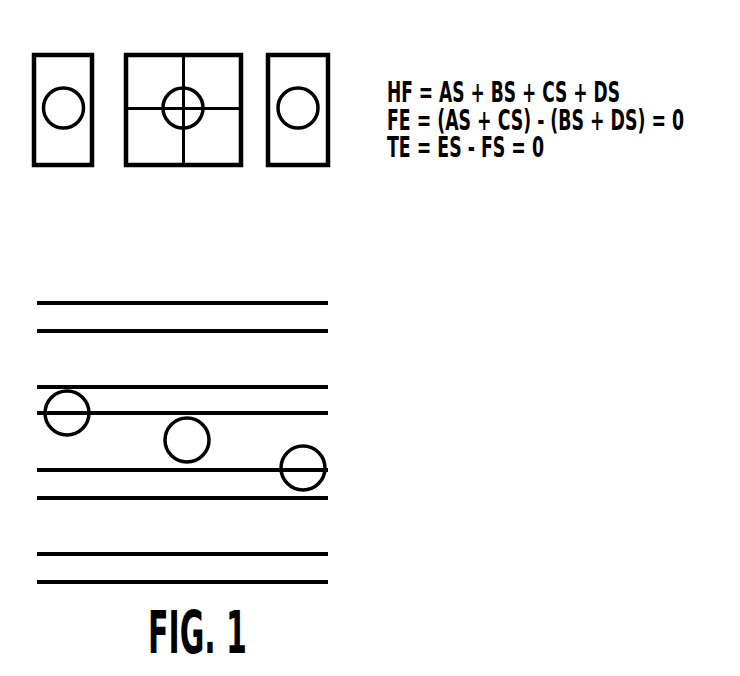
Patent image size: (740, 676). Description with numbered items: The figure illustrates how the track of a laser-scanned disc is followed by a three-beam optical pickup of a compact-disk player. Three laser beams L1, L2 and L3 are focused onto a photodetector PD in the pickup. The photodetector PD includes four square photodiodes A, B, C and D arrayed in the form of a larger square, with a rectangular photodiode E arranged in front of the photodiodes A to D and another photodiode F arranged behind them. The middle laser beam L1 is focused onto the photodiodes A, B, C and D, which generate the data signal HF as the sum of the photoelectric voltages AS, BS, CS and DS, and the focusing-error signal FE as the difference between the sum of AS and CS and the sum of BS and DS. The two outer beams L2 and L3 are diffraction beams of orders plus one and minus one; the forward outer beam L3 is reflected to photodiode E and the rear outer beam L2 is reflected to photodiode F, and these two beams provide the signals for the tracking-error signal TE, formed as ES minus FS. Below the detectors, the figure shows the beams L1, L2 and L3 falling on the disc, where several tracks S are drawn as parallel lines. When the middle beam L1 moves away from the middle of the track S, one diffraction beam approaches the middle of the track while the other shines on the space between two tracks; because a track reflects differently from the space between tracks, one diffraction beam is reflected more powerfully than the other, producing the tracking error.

The photodetector PD is at (183, 93).
The photodiode A is at (155, 82).
The photodiode B is at (213, 82).
The photodiode C is at (213, 137).
The photodiode D is at (155, 137).
The rectangular photodiode E is at (298, 110).
The photodiode F is at (63, 110).
The middle laser beam L1 is at (192, 427).
The rear outer laser beam L2 is at (70, 392).
The forward outer laser beam L3 is at (303, 447).
The track S is at (315, 362).